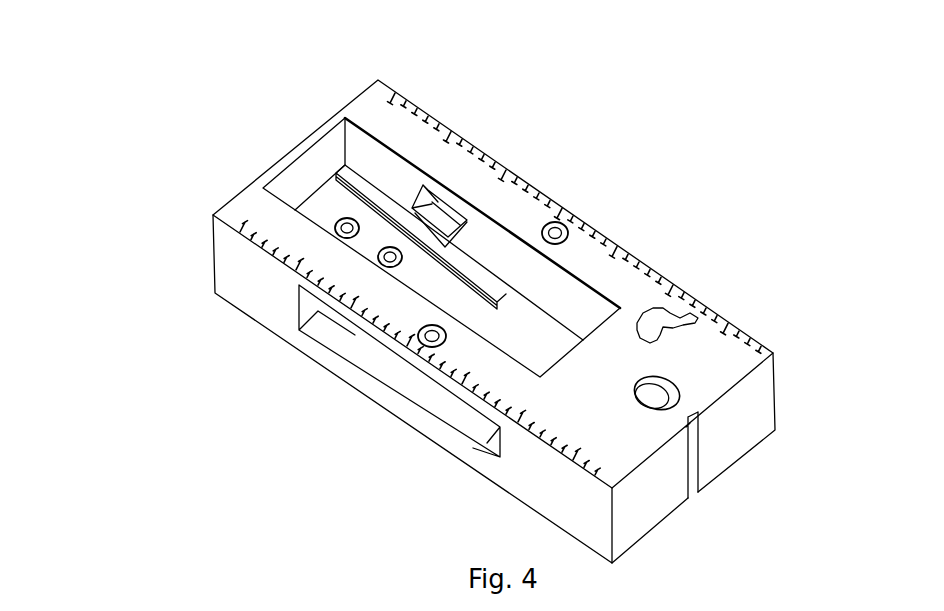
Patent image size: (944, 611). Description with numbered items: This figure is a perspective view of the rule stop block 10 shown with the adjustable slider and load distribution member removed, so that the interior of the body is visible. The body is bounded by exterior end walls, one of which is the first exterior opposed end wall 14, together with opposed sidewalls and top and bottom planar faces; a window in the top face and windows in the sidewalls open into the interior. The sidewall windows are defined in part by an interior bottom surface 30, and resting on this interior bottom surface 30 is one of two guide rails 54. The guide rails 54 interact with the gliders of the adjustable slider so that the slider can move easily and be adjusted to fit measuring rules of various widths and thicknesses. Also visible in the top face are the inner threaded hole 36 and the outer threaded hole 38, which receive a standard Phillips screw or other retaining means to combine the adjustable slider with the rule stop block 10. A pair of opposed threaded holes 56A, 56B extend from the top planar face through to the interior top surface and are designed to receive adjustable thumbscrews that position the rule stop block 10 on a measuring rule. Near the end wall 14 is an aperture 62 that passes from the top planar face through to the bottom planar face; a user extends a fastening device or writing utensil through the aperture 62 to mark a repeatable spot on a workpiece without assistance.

The rule stop block 10 is at (96, 281).
The first exterior opposed end wall 14 is at (747, 416).
The interior bottom surface 30 is at (365, 357).
The inner threaded hole 36 is at (397, 246).
The outer threaded hole 38 is at (338, 218).
The guide rail 54 is at (470, 268).
The threaded hole 56A is at (567, 222).
The threaded hole 56B is at (421, 356).
The aperture 62 is at (670, 378).